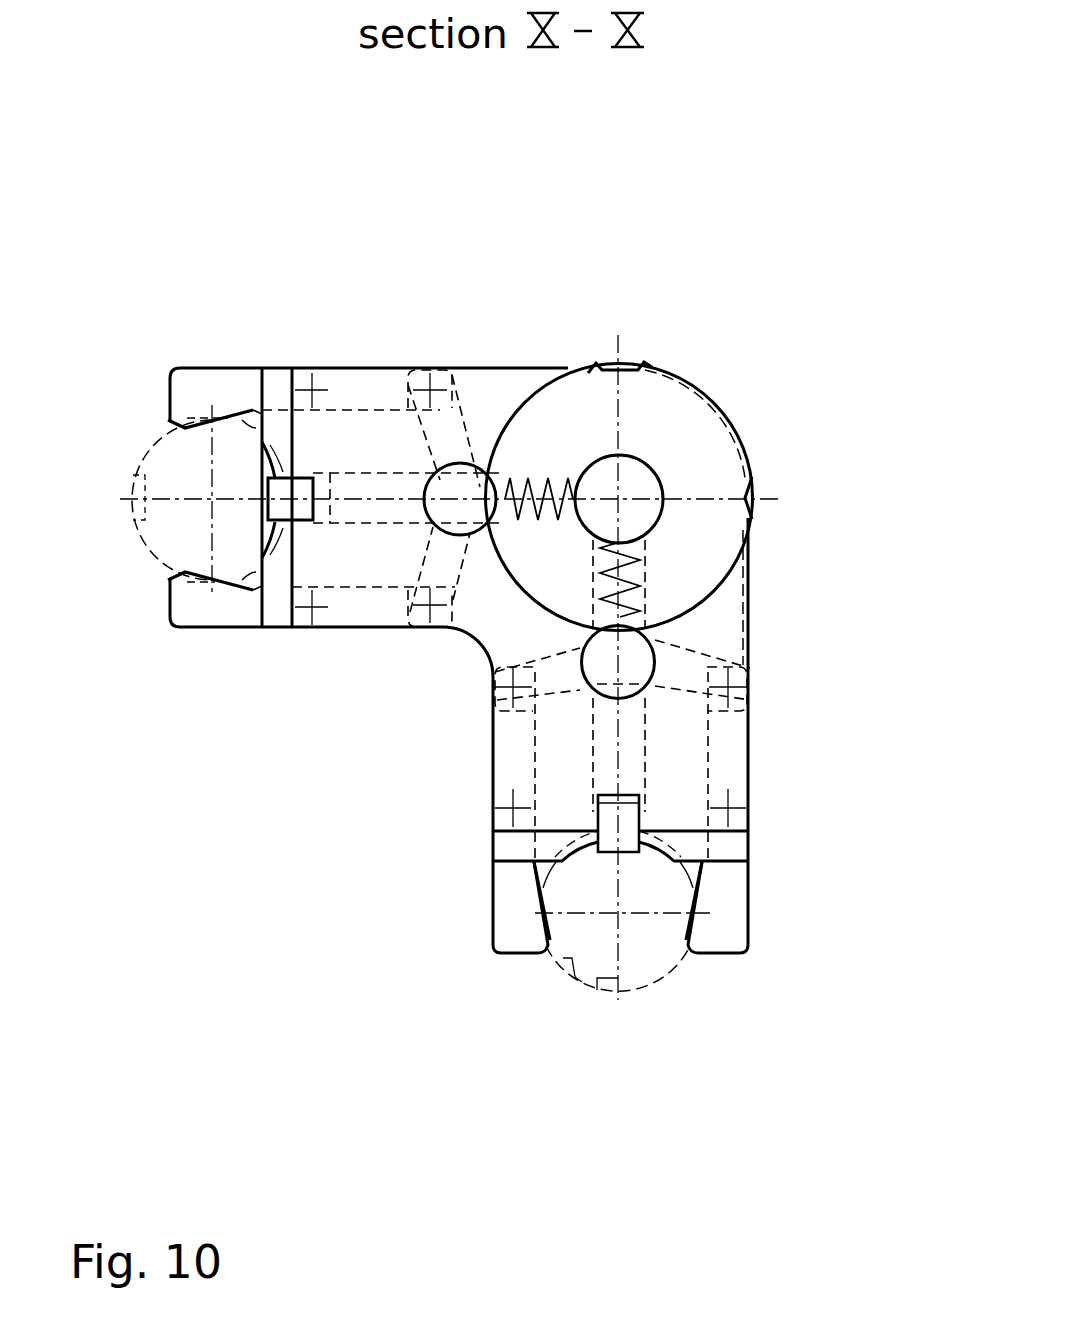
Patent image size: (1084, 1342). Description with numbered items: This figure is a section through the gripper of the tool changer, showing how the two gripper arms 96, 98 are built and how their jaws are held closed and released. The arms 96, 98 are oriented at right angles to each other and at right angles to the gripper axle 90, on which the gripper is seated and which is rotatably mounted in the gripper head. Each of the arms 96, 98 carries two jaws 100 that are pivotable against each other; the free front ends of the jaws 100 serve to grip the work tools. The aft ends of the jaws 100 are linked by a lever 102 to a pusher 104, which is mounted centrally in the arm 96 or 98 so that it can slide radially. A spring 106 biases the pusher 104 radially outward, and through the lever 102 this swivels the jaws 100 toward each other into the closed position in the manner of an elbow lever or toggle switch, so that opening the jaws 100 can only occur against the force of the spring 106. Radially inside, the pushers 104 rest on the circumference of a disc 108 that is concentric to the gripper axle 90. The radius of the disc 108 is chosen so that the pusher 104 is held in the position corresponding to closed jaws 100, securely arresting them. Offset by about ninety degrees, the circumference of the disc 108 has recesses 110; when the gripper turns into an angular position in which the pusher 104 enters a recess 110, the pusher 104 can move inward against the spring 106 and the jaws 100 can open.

The gripper axle 90 is at (637, 483).
The arm 96 is at (333, 545).
The arm 98 is at (675, 798).
The jaws 100 is at (517, 923).
The lever 102 is at (553, 677).
The pusher 104 is at (627, 727).
The spring 106 is at (630, 575).
The disc 108 is at (735, 428).
The recesses 110 is at (635, 628).